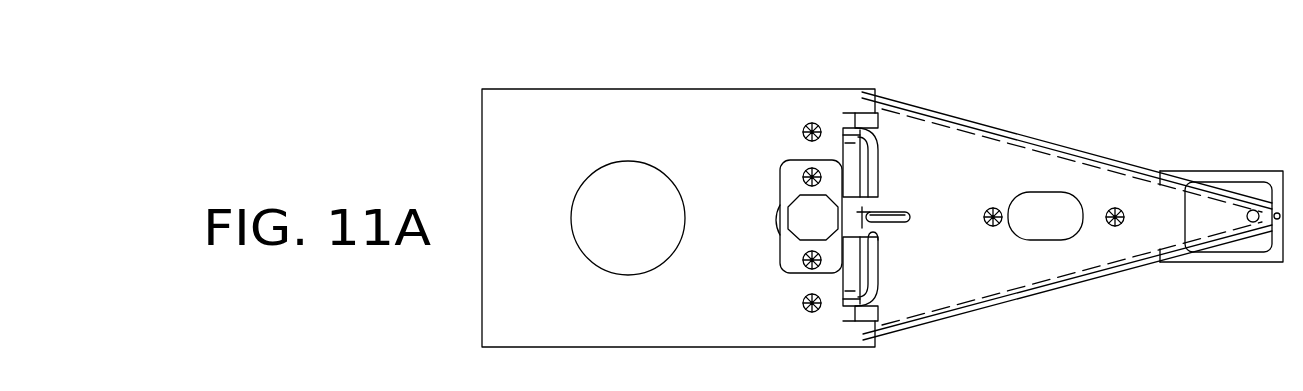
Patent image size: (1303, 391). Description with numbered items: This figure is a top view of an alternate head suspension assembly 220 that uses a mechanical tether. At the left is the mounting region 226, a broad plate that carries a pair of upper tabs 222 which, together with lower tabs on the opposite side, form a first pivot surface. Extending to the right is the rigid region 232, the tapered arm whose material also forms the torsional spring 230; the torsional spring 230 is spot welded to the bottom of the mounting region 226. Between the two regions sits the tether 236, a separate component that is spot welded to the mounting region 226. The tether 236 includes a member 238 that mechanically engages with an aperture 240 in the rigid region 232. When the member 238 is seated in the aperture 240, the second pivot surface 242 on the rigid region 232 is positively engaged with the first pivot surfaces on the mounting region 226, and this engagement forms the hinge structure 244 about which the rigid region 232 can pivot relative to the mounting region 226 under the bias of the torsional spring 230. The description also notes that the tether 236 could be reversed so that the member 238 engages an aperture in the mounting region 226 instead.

The head suspension assembly 220 is at (1161, 284).
The upper tabs 222 is at (863, 120).
The mounting region 226 is at (585, 128).
The torsional spring 230 is at (868, 272).
The rigid region 232 is at (1127, 195).
The tether 236 is at (780, 183).
The member 238 is at (884, 213).
The aperture 240 is at (915, 219).
The second pivot surface 242 is at (870, 93).
The hinge structure 244 is at (843, 324).